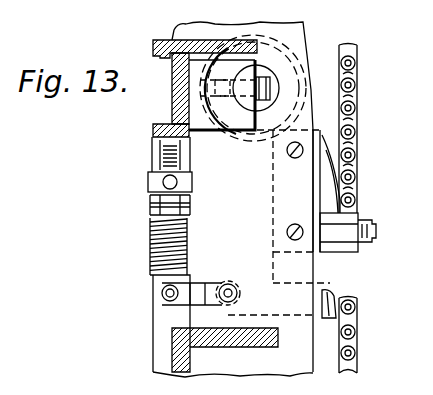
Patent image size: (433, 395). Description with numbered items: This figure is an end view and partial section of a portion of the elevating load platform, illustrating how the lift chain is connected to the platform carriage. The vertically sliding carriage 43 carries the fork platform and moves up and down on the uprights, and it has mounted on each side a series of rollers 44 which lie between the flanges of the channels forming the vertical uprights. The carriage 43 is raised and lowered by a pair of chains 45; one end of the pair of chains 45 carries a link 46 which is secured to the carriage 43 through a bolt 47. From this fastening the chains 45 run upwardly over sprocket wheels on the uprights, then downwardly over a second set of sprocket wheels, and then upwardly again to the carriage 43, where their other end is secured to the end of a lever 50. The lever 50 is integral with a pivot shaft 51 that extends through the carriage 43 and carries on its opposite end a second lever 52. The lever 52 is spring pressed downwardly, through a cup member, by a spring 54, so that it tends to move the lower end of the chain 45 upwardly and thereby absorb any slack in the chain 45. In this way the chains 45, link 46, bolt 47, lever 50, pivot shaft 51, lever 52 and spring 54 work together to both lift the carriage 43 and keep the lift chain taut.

The carriage 43 is at (168, 106).
The rollers 44 is at (288, 54).
The pair of chains 45 is at (357, 100).
The link 46 is at (350, 212).
The bolt 47 is at (376, 233).
The lever 50 is at (330, 292).
The pivot shaft 51 is at (229, 284).
The lever 52 is at (173, 314).
The spring 54 is at (150, 220).